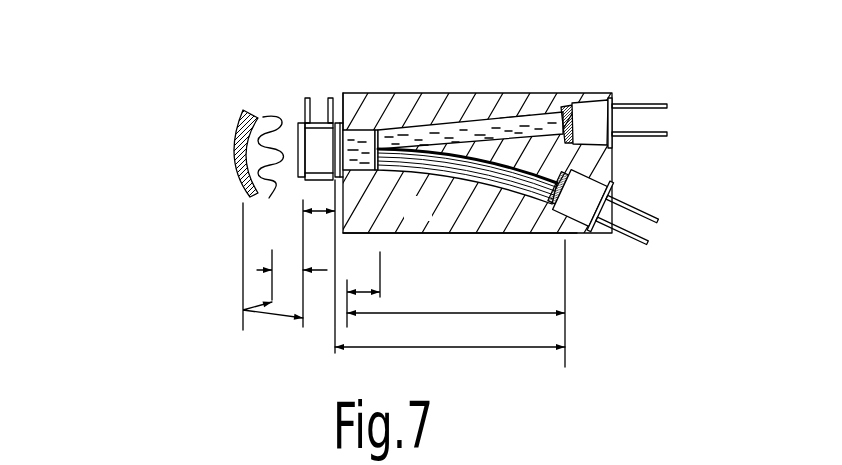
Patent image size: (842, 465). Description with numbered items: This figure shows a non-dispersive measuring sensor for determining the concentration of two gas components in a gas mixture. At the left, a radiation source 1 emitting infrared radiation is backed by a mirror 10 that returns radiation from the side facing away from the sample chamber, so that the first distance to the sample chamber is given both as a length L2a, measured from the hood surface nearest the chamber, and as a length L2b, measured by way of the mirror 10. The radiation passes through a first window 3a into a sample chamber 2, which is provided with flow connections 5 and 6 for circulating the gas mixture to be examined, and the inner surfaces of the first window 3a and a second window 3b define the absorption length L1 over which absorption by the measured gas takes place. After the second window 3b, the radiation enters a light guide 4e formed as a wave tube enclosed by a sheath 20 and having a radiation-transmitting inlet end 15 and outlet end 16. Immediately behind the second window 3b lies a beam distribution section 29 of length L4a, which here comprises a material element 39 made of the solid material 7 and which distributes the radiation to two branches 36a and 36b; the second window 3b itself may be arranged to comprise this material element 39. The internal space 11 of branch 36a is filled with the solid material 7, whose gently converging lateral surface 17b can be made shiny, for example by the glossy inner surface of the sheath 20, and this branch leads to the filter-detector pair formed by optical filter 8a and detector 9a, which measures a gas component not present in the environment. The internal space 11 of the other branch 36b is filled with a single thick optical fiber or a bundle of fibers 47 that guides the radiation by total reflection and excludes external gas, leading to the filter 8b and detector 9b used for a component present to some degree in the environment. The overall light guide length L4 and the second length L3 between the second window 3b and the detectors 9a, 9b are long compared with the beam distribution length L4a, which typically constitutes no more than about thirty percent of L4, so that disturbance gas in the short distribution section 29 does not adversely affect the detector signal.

The radiation source 1 is at (286, 130).
The sample chamber 2 is at (316, 132).
The first window 3a is at (300, 160).
The second window 3b is at (338, 182).
The light guide 4e is at (432, 244).
The flow connection 5 is at (307, 79).
The flow connection 6 is at (332, 88).
The solid material 7 is at (470, 98).
The optical filter 8a is at (604, 93).
The optical filter 8b is at (577, 237).
The detector 9a is at (615, 96).
The detector 9b is at (600, 186).
The mirror 10 is at (240, 124).
The internal space 11 is at (462, 125).
The radiation-transmitting end 15 is at (353, 118).
The radiation-transmitting end 16 is at (556, 118).
The lateral surface 17b is at (538, 170).
The sheath 20 is at (430, 219).
The beam distribution section 29 is at (360, 174).
The branch 36a is at (512, 119).
The branch 36b is at (553, 203).
The material element 39 is at (357, 148).
The bundle of fibers 47 is at (471, 159).
The absorption length L1 is at (319, 266).
The first length L2a is at (292, 278).
The first length L2b is at (273, 279).
The second length L3 is at (450, 361).
The wave tube length L4 is at (456, 303).
The beam distribution section length L4a is at (365, 293).